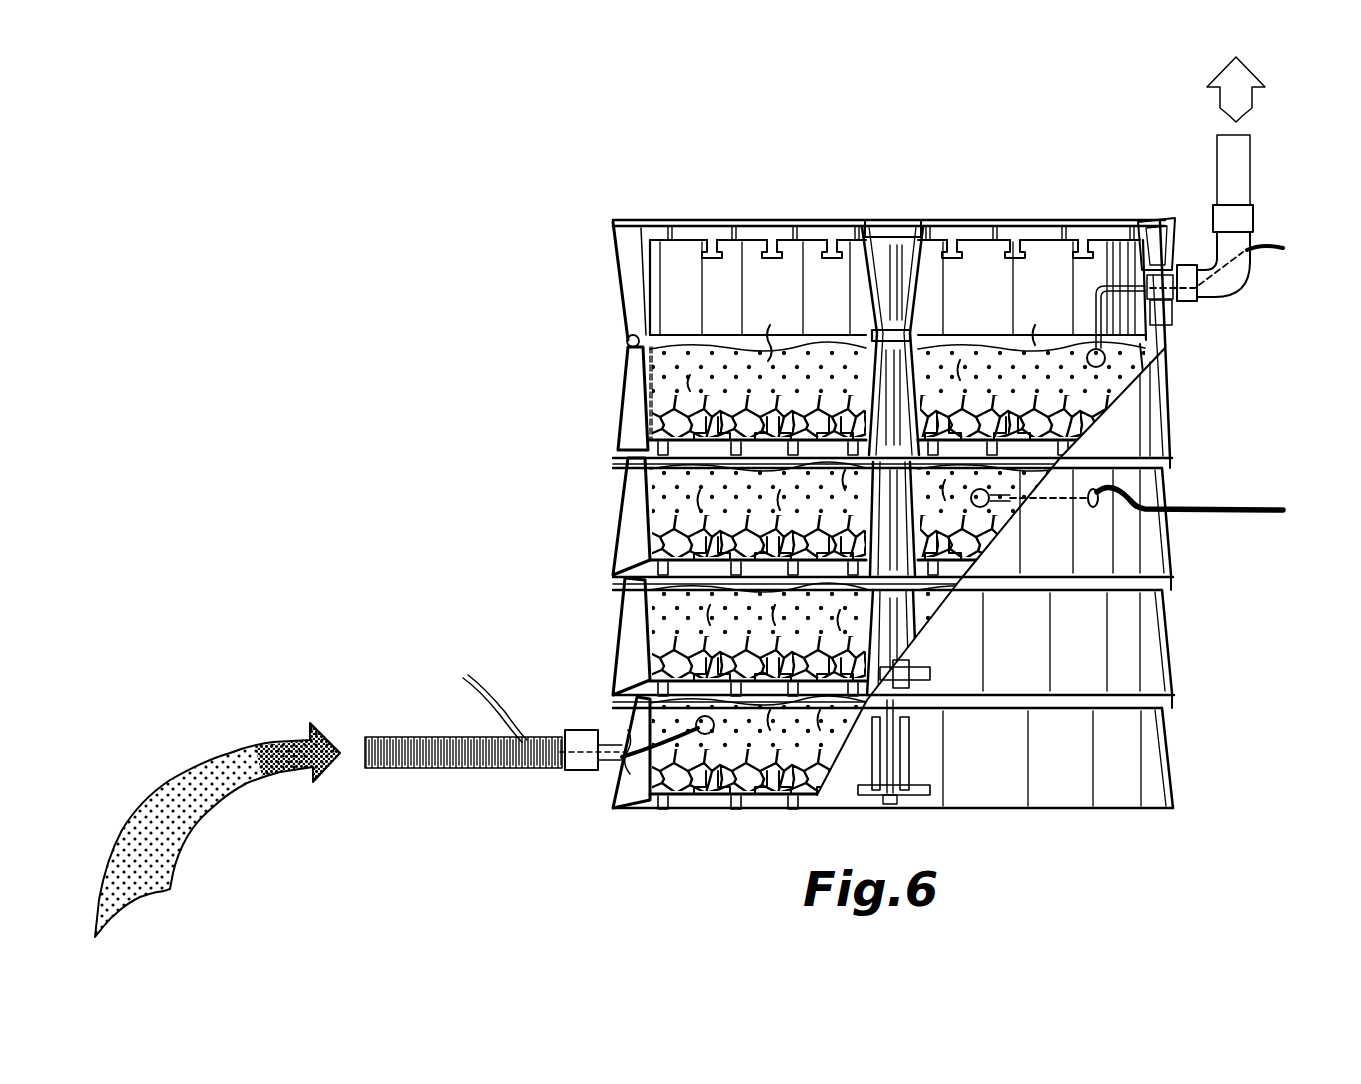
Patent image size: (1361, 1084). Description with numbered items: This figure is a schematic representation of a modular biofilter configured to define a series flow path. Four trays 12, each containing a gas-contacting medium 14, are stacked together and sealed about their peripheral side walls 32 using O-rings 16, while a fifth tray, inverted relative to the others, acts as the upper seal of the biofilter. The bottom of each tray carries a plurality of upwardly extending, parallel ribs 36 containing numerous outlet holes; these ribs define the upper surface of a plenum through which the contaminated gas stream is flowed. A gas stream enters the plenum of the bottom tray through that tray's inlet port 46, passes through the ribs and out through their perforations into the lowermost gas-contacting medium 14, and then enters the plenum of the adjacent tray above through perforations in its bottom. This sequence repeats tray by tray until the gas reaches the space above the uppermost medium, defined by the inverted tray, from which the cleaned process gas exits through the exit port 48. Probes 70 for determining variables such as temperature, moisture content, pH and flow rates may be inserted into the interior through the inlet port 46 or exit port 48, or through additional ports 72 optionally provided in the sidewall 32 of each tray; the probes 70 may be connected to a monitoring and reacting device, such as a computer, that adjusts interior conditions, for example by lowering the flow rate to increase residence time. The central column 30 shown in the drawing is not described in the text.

The tray 12 is at (1178, 670).
The gas-contacting medium 14 is at (663, 493).
The O-ring 16 is at (626, 340).
The central column 30 is at (915, 357).
The peripheral side wall 32 is at (618, 380).
The ribs 36 is at (618, 657).
The inlet port 46 is at (612, 775).
The exit port 48 is at (1178, 258).
The probes 70 is at (485, 702).
The additional ports 72 is at (1140, 483).